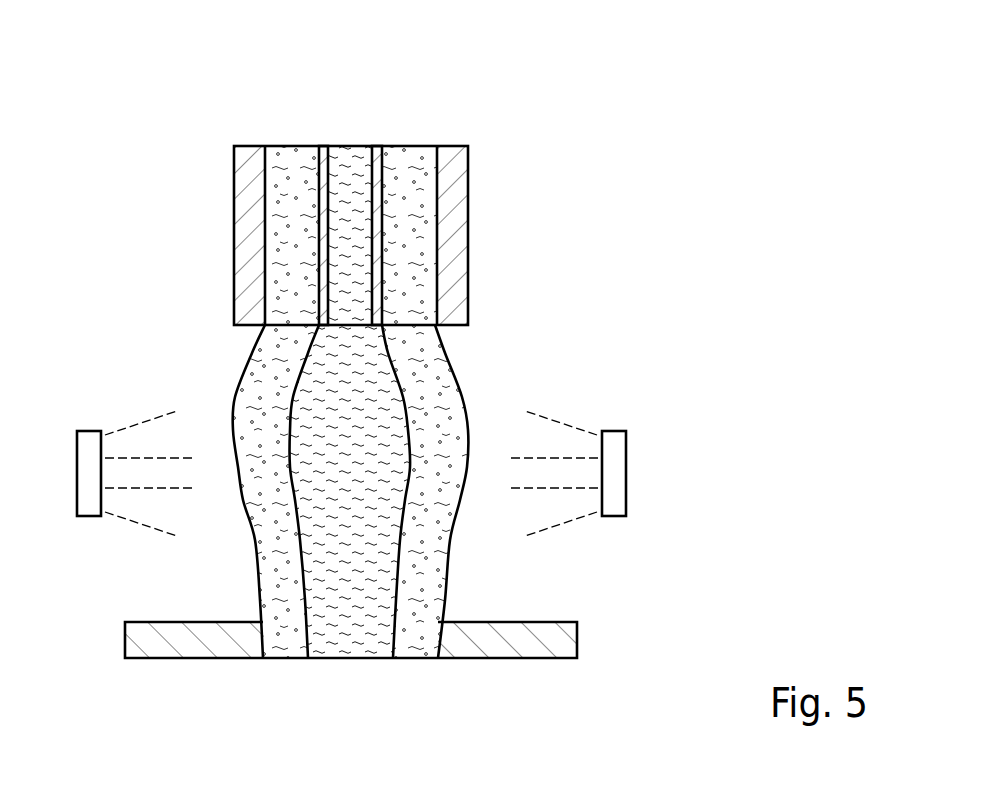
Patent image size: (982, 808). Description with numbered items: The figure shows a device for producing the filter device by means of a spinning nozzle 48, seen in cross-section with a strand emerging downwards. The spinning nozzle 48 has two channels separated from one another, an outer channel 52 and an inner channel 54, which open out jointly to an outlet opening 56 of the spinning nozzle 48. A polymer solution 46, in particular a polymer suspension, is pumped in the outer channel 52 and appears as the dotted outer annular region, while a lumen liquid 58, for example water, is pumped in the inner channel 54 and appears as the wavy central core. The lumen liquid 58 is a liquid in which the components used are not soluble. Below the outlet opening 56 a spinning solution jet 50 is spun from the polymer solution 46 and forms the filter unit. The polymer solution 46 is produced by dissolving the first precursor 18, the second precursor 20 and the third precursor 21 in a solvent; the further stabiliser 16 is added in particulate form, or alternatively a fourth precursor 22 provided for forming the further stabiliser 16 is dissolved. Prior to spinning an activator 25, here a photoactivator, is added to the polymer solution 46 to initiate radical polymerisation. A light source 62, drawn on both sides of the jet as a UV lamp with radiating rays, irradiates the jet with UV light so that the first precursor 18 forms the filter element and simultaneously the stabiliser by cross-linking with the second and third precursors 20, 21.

The further stabiliser 16 is at (582, 402).
The first precursor 18 is at (582, 402).
The second precursor 20 is at (582, 402).
The third precursor 21 is at (582, 402).
The fourth precursor 22 is at (582, 402).
The activator 25 is at (420, 263).
The polymer solution 46 is at (582, 356).
The spinning nozzle 48 is at (234, 213).
The spinning solution jet 50 is at (236, 347).
The outer channel 52 is at (288, 146).
The inner channel 54 is at (361, 144).
The outlet opening 56 is at (459, 343).
The lumen liquid 58 is at (343, 180).
The light source 62 is at (637, 468).